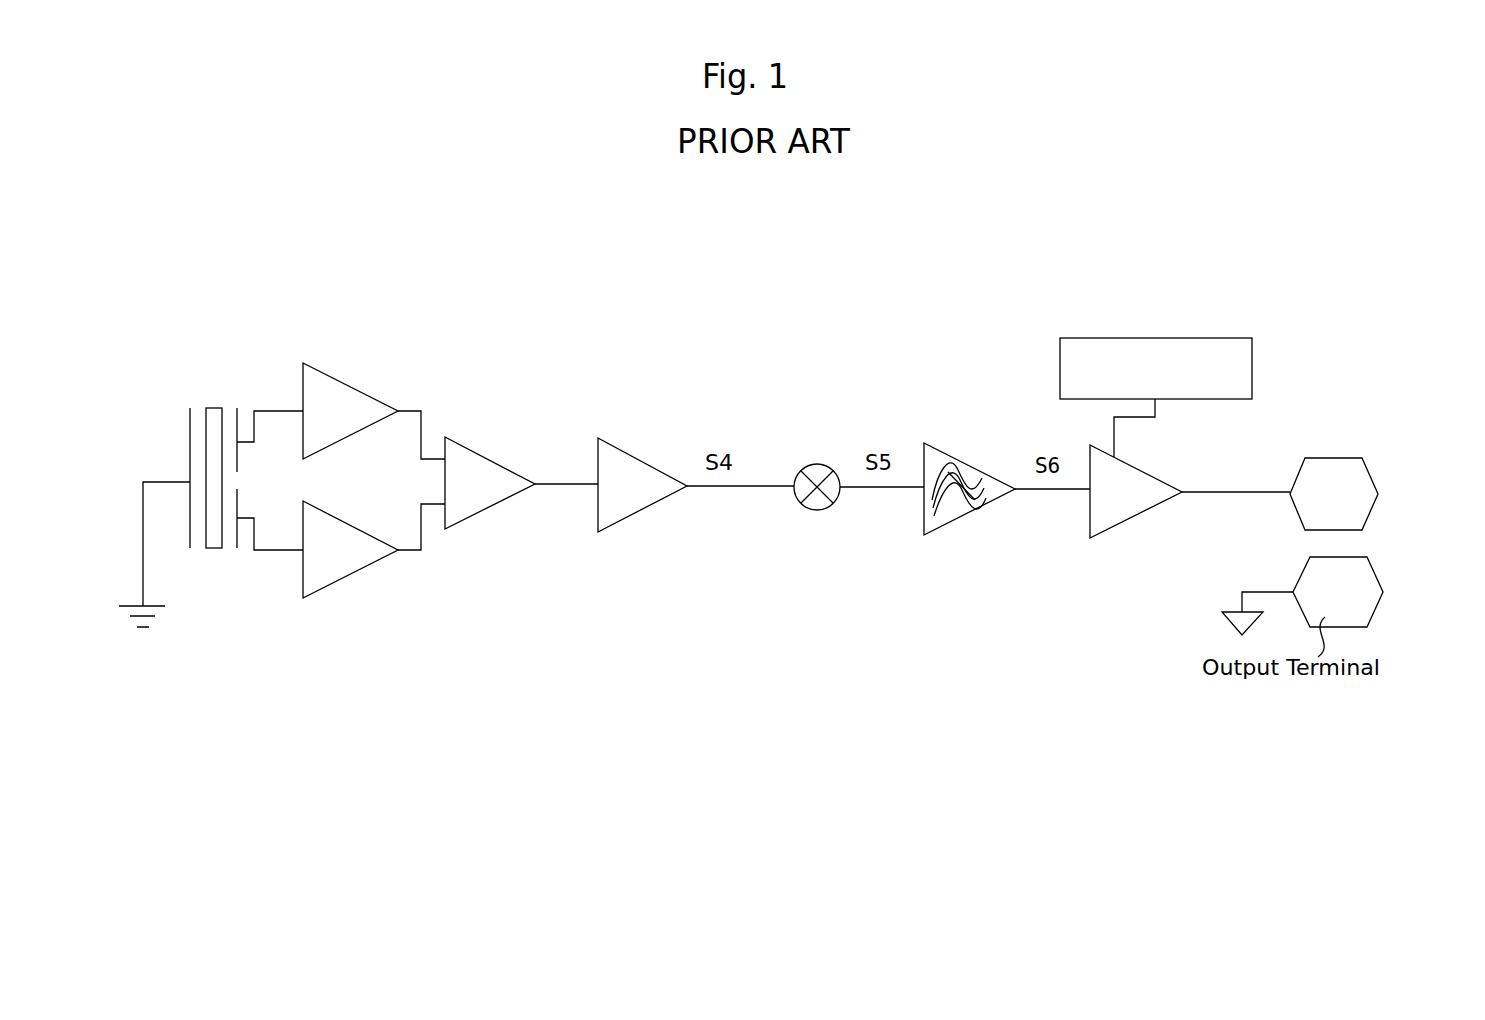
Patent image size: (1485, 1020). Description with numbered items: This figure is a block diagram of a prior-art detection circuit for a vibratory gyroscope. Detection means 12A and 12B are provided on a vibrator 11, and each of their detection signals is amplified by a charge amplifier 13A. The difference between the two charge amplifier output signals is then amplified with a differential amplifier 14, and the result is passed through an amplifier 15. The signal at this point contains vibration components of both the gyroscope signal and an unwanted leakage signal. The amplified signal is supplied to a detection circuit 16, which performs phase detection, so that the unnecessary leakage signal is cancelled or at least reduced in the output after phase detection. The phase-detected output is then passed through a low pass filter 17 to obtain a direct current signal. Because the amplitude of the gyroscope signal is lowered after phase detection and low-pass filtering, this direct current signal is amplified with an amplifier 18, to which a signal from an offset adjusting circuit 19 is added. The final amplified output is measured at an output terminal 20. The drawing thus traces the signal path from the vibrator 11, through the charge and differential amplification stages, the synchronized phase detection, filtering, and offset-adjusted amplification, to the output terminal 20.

The vibrator 11 is at (217, 414).
The detection means 12A is at (238, 430).
The detection means 12B is at (238, 547).
The charge amplifier 13A is at (315, 382).
The differential amplifier 14 is at (457, 477).
The amplifier 15 is at (632, 505).
The detection circuit 16 is at (815, 557).
The low pass filter 17 is at (940, 558).
The amplifier 18 is at (1122, 512).
The offset adjusting circuit 19 is at (1197, 342).
The output terminal 20 is at (1320, 467).